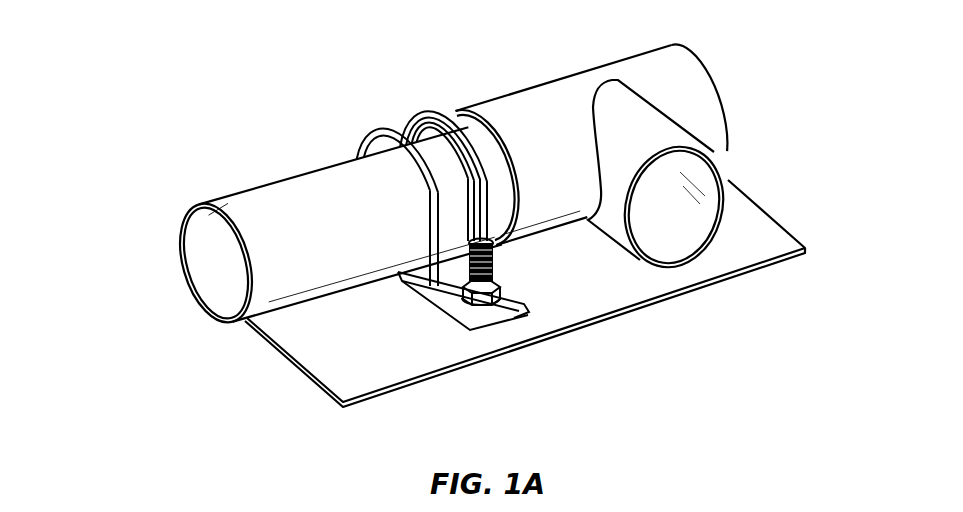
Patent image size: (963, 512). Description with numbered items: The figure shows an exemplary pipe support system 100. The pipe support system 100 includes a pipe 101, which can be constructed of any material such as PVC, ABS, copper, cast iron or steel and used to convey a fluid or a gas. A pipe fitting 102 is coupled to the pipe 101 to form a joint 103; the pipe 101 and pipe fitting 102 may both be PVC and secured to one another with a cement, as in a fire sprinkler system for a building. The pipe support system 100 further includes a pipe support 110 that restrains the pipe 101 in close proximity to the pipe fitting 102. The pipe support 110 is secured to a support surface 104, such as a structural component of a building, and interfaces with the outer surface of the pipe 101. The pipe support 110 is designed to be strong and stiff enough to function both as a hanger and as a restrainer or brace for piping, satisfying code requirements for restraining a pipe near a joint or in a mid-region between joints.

The pipe support system 100 is at (223, 58).
The pipe 101 is at (256, 183).
The pipe fitting 102 is at (548, 79).
The joint 103 is at (450, 105).
The support surface 104 is at (437, 343).
The pipe support 110 is at (376, 99).